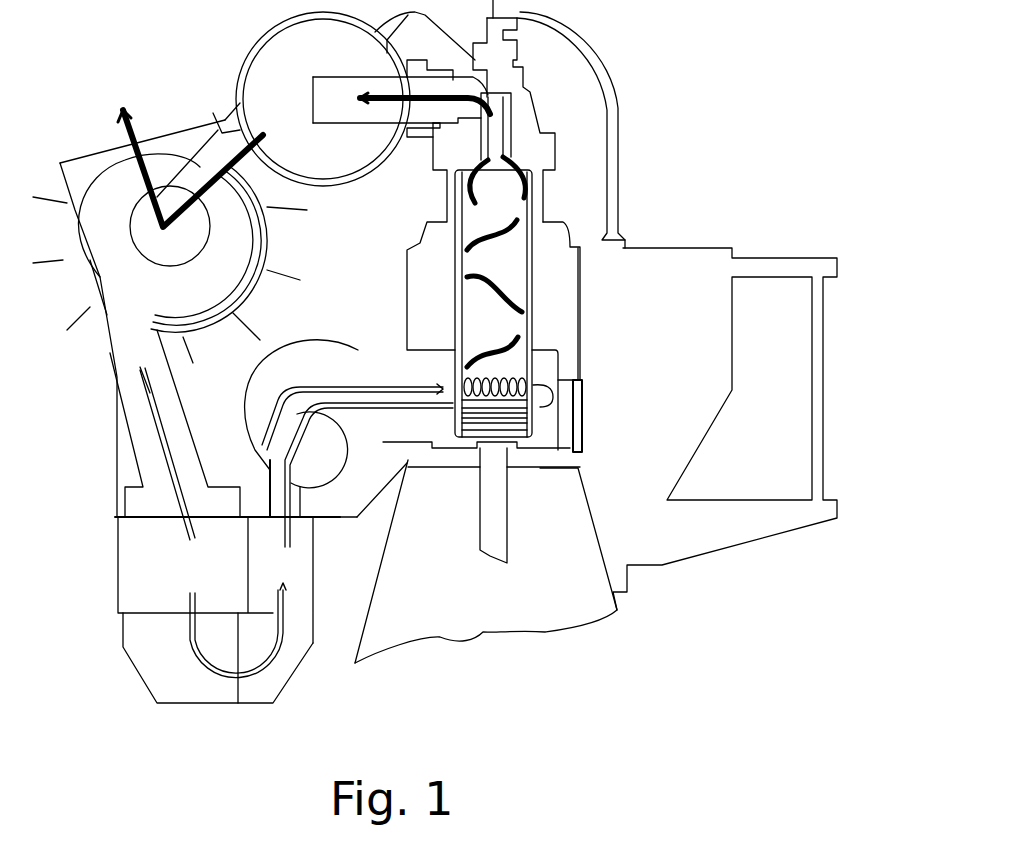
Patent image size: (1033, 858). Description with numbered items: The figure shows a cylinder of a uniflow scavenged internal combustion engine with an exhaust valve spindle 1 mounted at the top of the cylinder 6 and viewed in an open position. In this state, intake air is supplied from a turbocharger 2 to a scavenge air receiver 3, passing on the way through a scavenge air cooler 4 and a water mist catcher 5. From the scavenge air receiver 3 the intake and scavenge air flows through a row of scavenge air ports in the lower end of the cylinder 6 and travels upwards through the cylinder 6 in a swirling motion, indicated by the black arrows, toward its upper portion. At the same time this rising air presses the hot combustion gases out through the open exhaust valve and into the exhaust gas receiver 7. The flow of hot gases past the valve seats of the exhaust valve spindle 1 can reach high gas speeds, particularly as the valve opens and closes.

The exhaust valve spindle 1 is at (503, 128).
The turbocharger 2 is at (118, 195).
The scavenge air receiver 3 is at (263, 390).
The scavenge air cooler 4 is at (153, 565).
The water mist catcher 5 is at (252, 692).
The cylinder 6 is at (497, 273).
The exhaust gas receiver 7 is at (272, 68).